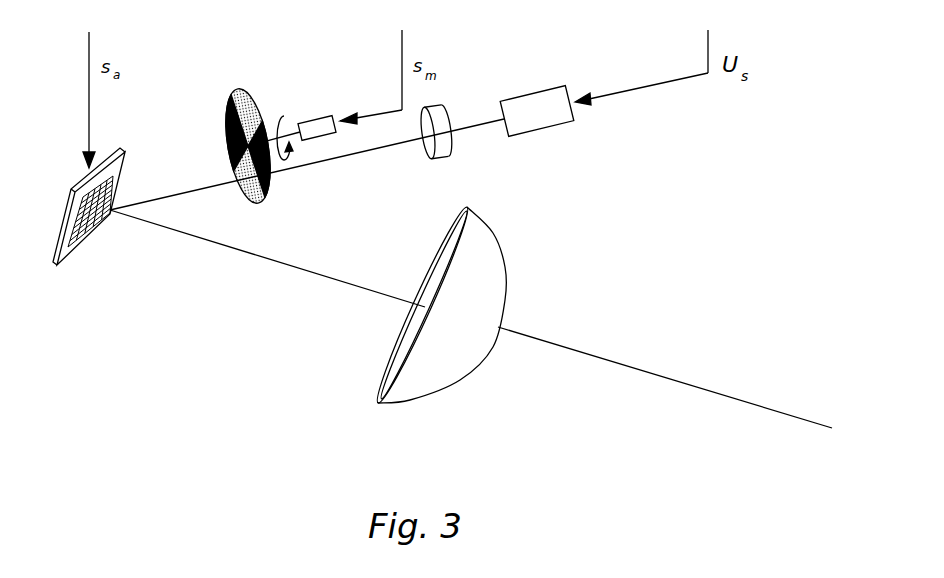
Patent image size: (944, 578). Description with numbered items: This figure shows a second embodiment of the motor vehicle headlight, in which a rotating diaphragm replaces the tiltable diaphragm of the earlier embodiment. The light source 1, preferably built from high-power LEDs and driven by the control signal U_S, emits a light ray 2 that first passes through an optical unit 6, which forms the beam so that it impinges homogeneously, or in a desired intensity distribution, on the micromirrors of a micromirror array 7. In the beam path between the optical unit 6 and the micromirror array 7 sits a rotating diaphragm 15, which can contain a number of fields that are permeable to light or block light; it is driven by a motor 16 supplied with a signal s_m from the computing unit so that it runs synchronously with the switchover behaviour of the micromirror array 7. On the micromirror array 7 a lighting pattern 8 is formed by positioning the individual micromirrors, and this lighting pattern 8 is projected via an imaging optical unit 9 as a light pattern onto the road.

The light source 1 is at (548, 113).
The light ray 2 is at (377, 148).
The optical unit 6 is at (445, 148).
The micromirror array 7 is at (63, 253).
The lighting pattern 8 is at (98, 227).
The imaging optical unit 9 is at (430, 367).
The rotating diaphragm 15 is at (248, 98).
The motor 16 is at (326, 127).